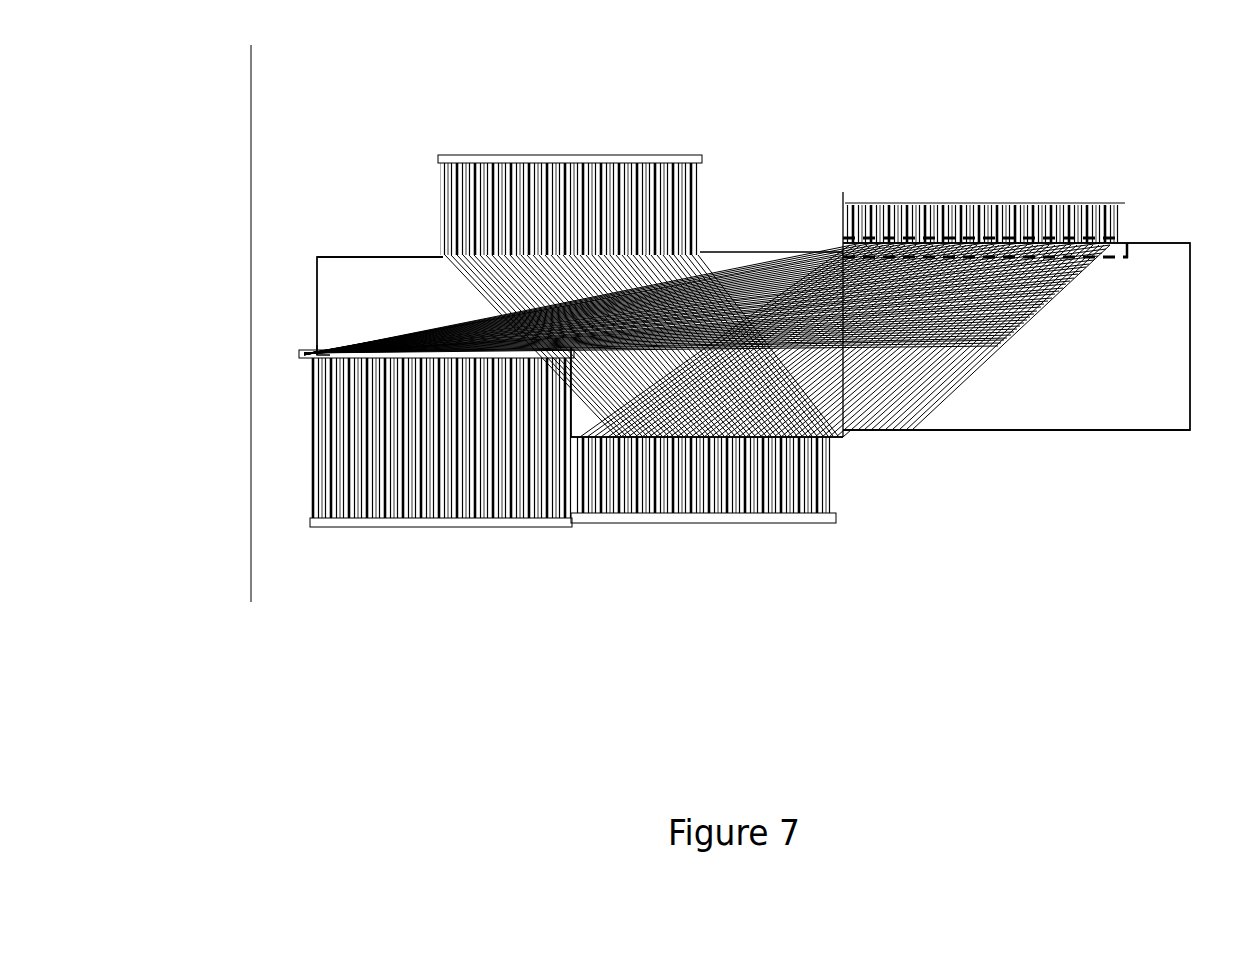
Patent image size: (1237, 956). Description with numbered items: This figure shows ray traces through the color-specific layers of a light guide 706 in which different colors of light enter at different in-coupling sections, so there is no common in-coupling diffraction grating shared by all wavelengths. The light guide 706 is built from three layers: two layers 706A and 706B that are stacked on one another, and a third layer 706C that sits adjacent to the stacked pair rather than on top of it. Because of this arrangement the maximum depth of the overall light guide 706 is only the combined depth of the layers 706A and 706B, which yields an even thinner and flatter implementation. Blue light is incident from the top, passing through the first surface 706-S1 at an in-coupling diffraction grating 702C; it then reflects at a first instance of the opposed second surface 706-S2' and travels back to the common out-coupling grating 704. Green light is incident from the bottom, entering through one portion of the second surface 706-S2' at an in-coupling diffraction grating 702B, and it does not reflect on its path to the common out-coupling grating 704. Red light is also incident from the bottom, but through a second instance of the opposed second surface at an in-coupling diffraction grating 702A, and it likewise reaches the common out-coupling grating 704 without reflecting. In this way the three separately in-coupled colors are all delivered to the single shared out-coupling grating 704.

The in-coupling diffraction grating 702A is at (318, 356).
The in-coupling diffraction grating 702B is at (832, 437).
The in-coupling diffraction grating 702C is at (687, 253).
The common out-coupling grating 704 is at (1130, 237).
The light guide 706 is at (261, 650).
The layer 706A is at (380, 306).
The layer 706B is at (600, 397).
The third layer 706C is at (1016, 336).
The first surface 706-S1 is at (379, 245).
The second surface 706-S2' is at (1016, 461).